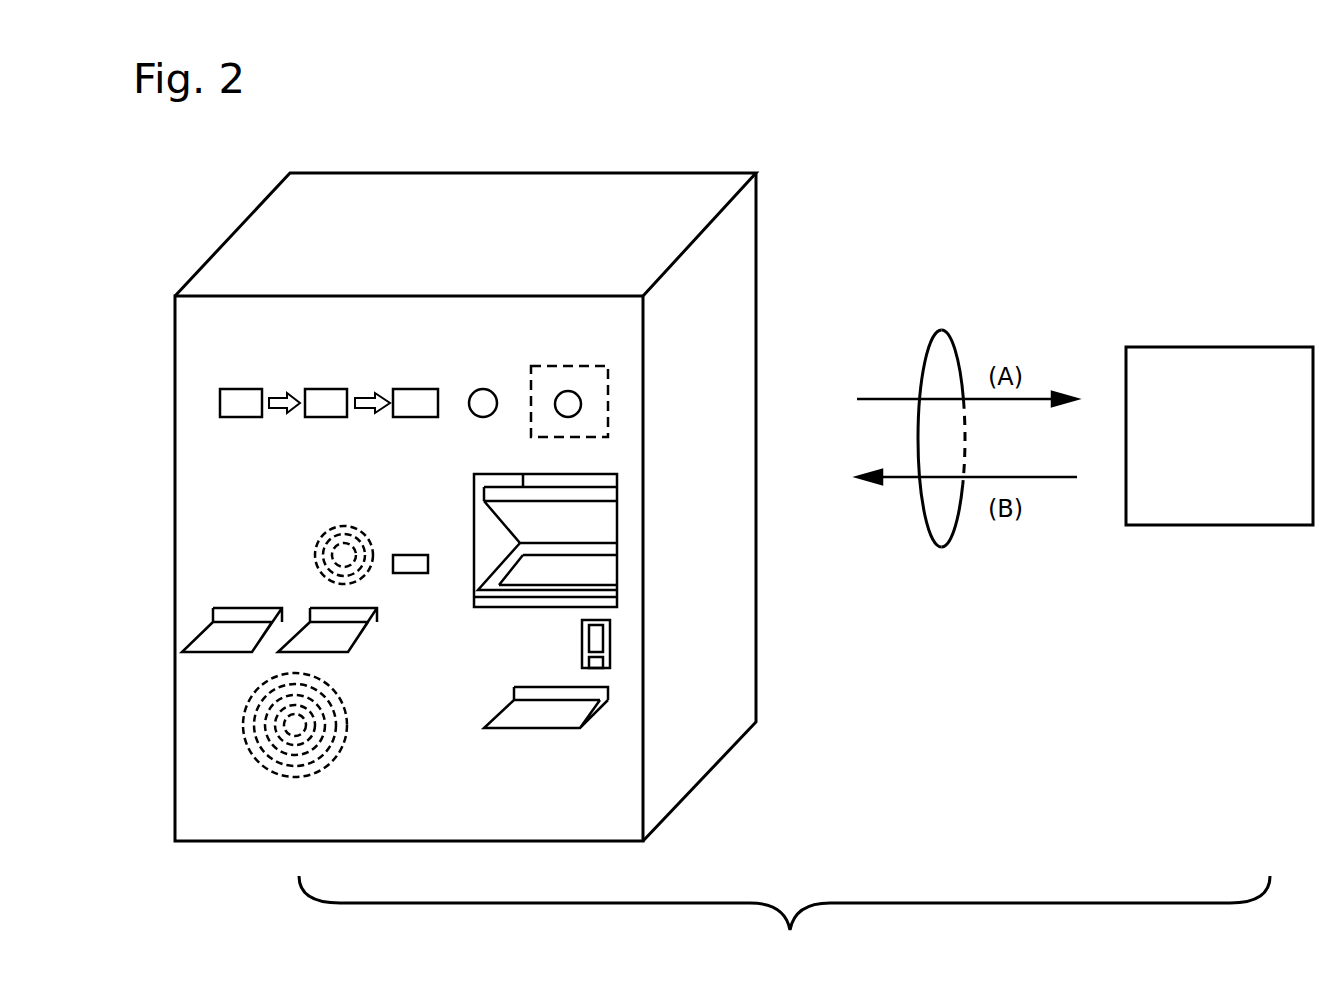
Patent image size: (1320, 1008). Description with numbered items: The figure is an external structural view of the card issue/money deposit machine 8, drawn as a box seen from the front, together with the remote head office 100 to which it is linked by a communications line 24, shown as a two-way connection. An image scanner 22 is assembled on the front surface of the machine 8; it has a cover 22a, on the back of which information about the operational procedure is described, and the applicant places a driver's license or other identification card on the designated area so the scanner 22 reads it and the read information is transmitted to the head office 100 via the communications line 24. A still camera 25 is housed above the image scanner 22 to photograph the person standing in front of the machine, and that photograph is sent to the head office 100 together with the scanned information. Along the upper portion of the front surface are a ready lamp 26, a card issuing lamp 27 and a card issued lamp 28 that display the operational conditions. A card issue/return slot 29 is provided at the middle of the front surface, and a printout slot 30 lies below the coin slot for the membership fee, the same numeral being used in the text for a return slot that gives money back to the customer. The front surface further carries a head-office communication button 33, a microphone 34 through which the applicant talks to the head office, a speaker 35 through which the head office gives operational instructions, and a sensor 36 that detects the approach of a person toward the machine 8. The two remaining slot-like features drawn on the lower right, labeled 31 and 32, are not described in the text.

The card issue/money deposit machine 8 is at (786, 289).
The image scanner 22 is at (588, 573).
The cover 22a is at (573, 510).
The communications line 24 is at (942, 330).
The still camera 25 is at (591, 365).
The ready lamp 26 is at (240, 388).
The card issuing lamp 27 is at (328, 388).
The card issued lamp 28 is at (415, 388).
The card issue/return slot 29 is at (325, 642).
The printout slot 30 is at (242, 617).
The card insertion slot 31 is at (603, 643).
The receipt outlet tray 32 is at (573, 720).
The head-office communication button 33 is at (408, 555).
The microphone 34 is at (345, 530).
The speaker 35 is at (327, 733).
The sensor 36 is at (483, 388).
The head office 100 is at (1217, 347).